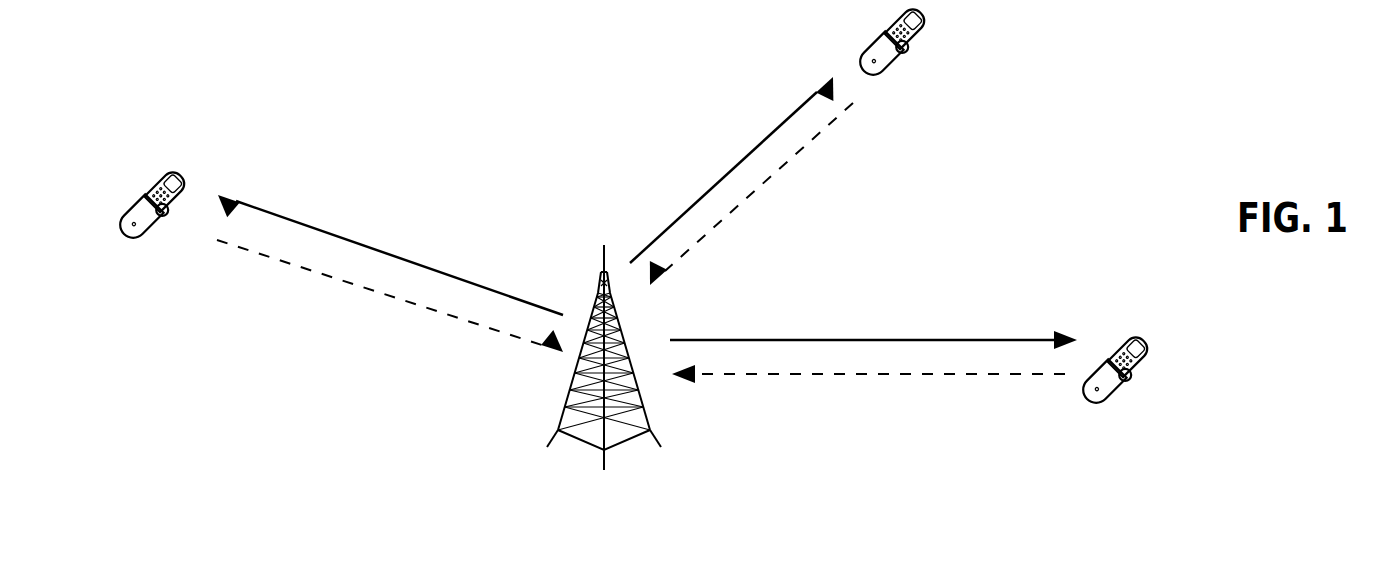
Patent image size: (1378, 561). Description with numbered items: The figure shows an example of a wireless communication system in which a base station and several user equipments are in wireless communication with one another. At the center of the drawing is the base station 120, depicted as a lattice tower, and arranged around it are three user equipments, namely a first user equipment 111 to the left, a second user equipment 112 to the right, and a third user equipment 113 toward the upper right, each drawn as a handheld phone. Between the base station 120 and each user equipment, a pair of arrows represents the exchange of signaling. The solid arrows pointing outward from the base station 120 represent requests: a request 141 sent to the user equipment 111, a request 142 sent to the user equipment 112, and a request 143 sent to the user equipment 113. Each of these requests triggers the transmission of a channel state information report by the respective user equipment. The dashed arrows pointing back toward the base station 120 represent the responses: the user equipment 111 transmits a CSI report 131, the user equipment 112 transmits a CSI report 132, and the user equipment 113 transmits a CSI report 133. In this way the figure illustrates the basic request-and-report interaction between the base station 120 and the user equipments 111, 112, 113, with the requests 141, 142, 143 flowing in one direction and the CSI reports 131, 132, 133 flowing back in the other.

The user equipment 111 is at (141, 243).
The user equipment 112 is at (1118, 401).
The user equipment 113 is at (900, 74).
The base station 120 is at (651, 424).
The CSI report 131 is at (430, 308).
The CSI report 132 is at (908, 377).
The CSI report 133 is at (718, 222).
The request 141 is at (323, 233).
The request 142 is at (985, 338).
The request 143 is at (742, 155).